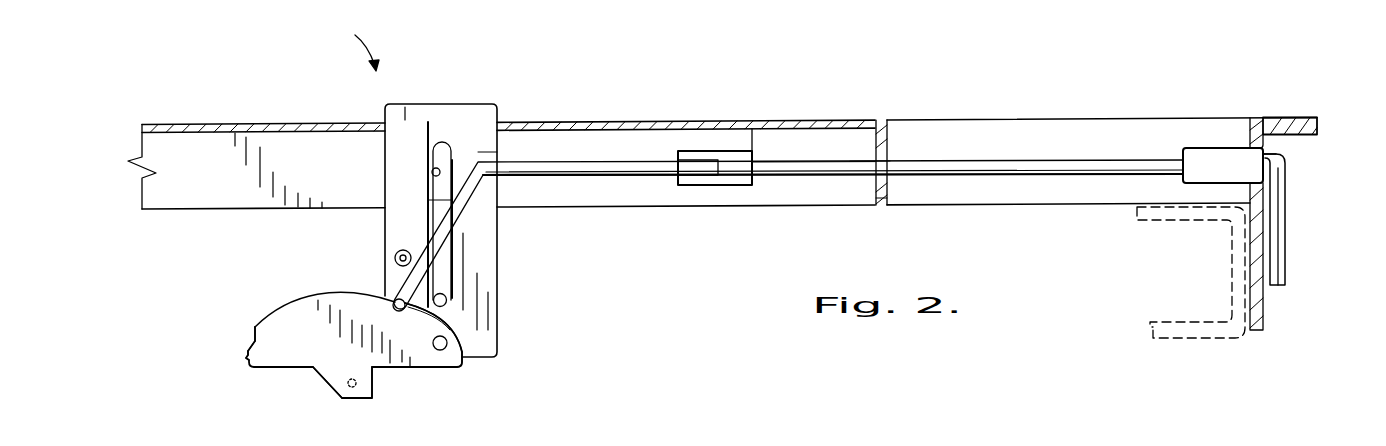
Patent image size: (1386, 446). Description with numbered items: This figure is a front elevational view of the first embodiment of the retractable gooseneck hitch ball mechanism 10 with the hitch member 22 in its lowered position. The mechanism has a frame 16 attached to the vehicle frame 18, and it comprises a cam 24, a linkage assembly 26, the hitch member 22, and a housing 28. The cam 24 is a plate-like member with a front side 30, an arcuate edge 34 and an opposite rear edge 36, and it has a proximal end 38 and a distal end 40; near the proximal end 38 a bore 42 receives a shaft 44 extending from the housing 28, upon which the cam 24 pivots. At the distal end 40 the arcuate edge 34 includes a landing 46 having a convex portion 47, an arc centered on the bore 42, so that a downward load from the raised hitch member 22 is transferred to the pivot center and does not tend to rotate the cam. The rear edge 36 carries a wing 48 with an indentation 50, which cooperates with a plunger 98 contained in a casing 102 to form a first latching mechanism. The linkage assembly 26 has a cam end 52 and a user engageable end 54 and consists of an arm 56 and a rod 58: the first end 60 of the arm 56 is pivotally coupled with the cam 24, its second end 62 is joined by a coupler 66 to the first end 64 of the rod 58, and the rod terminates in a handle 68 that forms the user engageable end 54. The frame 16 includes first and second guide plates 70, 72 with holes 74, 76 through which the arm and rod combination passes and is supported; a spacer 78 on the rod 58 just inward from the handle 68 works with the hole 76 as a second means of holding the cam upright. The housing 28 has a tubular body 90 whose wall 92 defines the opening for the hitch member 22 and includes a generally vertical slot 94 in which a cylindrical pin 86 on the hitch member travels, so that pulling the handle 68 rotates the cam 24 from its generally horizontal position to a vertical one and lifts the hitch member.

The retractable gooseneck hitch ball mechanism 10 is at (357, 40).
The frame 16 is at (156, 124).
The vehicle frame 18 is at (1150, 330).
The hitch member 22 is at (442, 158).
The cam 24 is at (283, 332).
The linkage assembly 26 is at (821, 163).
The housing 28 is at (488, 283).
The front side 30 is at (387, 368).
The arcuate edge 34 is at (312, 306).
The rear edge 36 is at (278, 370).
The proximal end 38 is at (456, 368).
The distal end 40 is at (247, 358).
The bore 42 is at (432, 368).
The shaft 44 is at (448, 337).
The landing 46 is at (254, 343).
The convex portion 47 is at (255, 328).
The wing 48 is at (343, 389).
The indentation 50 is at (354, 390).
The cam end 52 is at (442, 318).
The user engageable end 54 is at (1277, 233).
The arm 56 is at (458, 198).
The rod 58 is at (867, 165).
The first end 60 is at (391, 302).
The second end 62 is at (699, 167).
The first end 64 is at (767, 165).
The coupler 66 is at (738, 177).
The handle 68 is at (1277, 208).
The first guide plate 70 is at (887, 199).
The second guide plate 72 is at (1257, 330).
The hole 74 is at (885, 155).
The hole 76 is at (1272, 153).
The spacer 78 is at (1211, 150).
The pin 86 is at (450, 293).
The body 90 is at (478, 152).
The wall 92 is at (410, 123).
The vertical slot 94 is at (432, 163).
The plunger 98 is at (394, 258).
The casing 102 is at (397, 250).